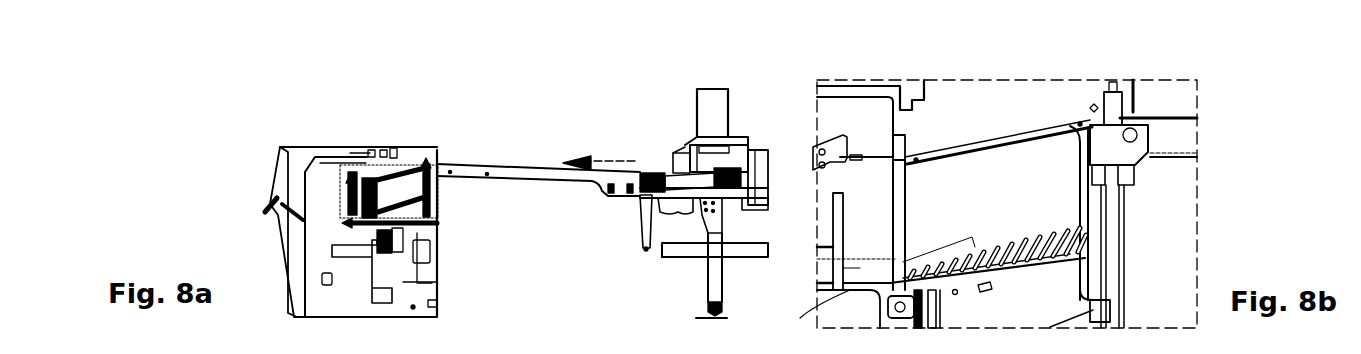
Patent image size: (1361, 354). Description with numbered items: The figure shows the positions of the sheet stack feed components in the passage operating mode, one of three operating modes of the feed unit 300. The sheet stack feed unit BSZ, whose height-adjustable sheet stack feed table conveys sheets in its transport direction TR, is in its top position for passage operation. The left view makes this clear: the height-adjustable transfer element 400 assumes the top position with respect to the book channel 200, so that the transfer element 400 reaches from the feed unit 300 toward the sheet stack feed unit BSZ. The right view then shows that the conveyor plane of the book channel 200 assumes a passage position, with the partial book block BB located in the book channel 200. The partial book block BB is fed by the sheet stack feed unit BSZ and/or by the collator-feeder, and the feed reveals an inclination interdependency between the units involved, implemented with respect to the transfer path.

In FIG. 8A, the feed unit 300 is at (250, 165).
In FIG. 8A, the book channel 200 is at (397, 193).
In FIG. 8B, the book channel 200 is at (1028, 165).
In FIG. 8A, the height-adjustable transfer element 400 is at (530, 170).
In FIG. 8A, the sheet stack feed unit BSZ is at (714, 87).
In FIG. 8A, the transport direction TR is at (722, 152).
In FIG. 8B, the partial book block BB is at (820, 300).